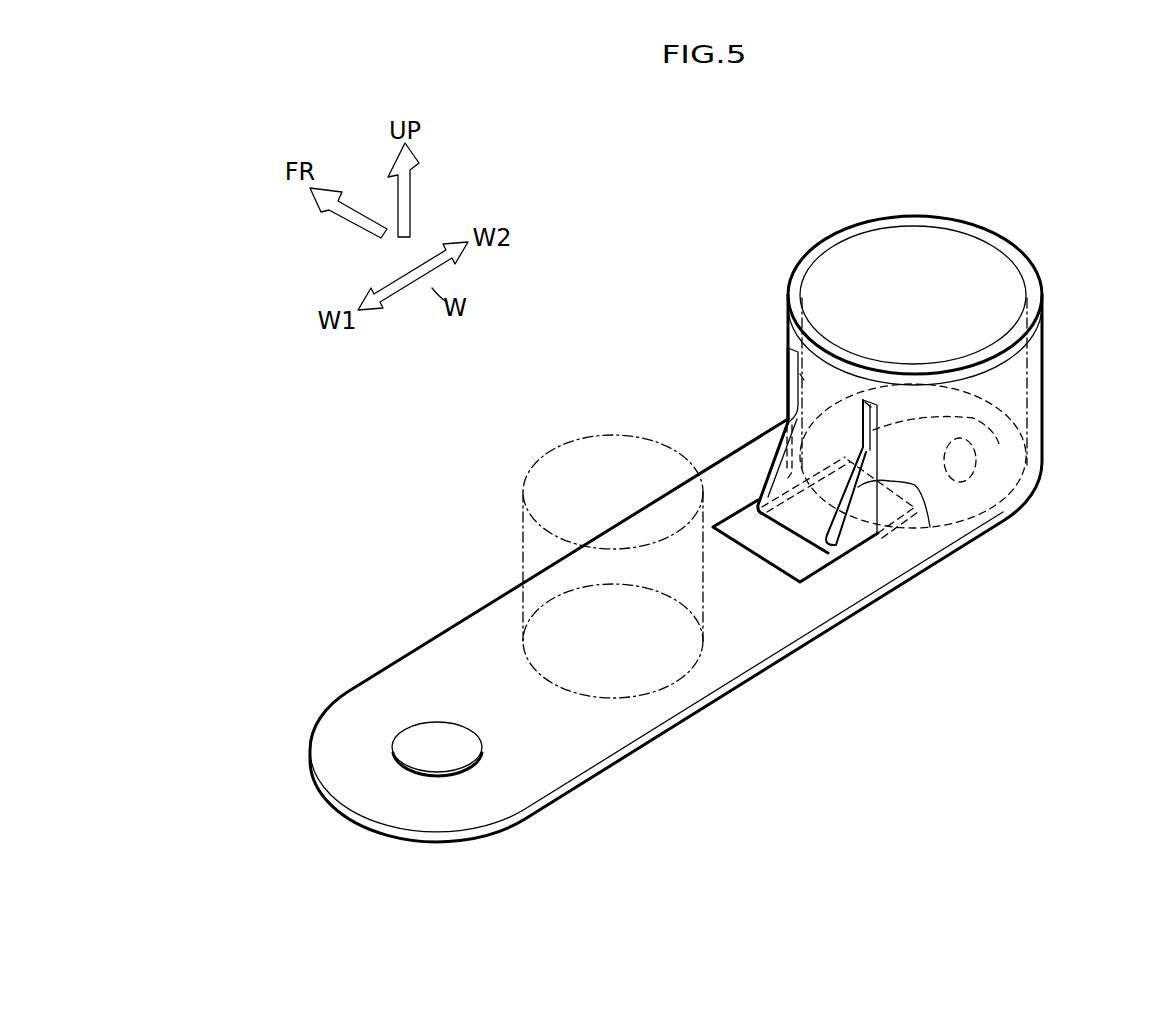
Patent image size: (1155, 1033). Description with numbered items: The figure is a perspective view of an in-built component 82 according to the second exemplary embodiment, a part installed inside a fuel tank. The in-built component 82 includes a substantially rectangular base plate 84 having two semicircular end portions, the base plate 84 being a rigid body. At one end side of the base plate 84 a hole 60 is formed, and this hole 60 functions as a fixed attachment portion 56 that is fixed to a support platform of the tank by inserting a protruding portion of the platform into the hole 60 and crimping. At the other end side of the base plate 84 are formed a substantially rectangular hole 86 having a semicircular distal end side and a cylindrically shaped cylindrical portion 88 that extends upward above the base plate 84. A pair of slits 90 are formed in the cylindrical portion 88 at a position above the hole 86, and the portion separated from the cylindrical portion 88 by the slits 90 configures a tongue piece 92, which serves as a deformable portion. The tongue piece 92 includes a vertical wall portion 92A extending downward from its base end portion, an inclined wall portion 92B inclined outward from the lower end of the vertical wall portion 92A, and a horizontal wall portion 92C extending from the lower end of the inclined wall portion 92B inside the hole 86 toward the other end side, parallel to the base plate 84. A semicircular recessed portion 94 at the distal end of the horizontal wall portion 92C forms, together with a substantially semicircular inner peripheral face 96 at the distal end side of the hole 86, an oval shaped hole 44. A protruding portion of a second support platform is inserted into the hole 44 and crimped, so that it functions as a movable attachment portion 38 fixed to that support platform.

The movable attachment portion 38 is at (1060, 412).
The oval shaped hole 44 is at (1037, 630).
The fixed attachment portion 56 is at (386, 695).
The hole 60 is at (440, 727).
The in-built component 82 is at (578, 362).
The base plate 84 is at (473, 623).
The hole 86 is at (778, 556).
The cylindrical portion 88 is at (948, 238).
The slits 90 is at (803, 377).
The tongue piece 92 is at (763, 442).
The vertical wall portion 92A is at (815, 400).
The inclined wall portion 92B is at (762, 520).
The horizontal wall portion 92C is at (862, 538).
The semicircular recessed portion 94 is at (915, 485).
The inner peripheral face 96 is at (977, 483).